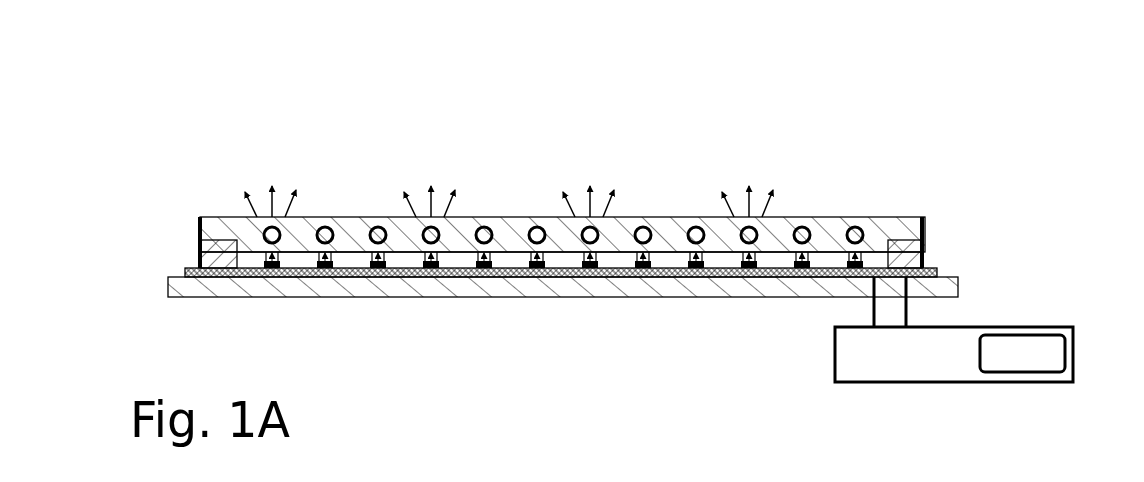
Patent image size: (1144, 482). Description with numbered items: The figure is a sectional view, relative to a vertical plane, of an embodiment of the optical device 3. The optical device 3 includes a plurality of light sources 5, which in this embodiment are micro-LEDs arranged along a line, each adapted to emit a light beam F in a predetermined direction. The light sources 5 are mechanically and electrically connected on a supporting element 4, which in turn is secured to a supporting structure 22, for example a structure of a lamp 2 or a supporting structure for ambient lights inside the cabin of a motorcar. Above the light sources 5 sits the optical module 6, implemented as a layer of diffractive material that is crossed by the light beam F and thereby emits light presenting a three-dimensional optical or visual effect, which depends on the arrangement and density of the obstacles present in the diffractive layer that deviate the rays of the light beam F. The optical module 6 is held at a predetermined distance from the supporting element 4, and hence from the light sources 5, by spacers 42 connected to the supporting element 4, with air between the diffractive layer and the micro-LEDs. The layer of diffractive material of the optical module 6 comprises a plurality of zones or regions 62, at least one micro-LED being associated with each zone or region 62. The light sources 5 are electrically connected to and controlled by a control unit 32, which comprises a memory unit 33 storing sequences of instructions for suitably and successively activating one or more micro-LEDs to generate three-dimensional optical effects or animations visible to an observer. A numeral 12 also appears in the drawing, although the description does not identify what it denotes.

The lamp 2 is at (135, 115).
The optical device 3 is at (155, 245).
The supporting element 4 is at (936, 268).
The light sources 5 is at (484, 270).
The optical module 6 is at (890, 216).
The object 12 is at (100, 481).
The supporting structure 22 is at (262, 290).
The control unit 32 is at (1055, 326).
The memory unit 33 is at (1035, 360).
The spacers 42 is at (195, 250).
The zones or regions 62 is at (378, 212).
The light beam F is at (298, 268).